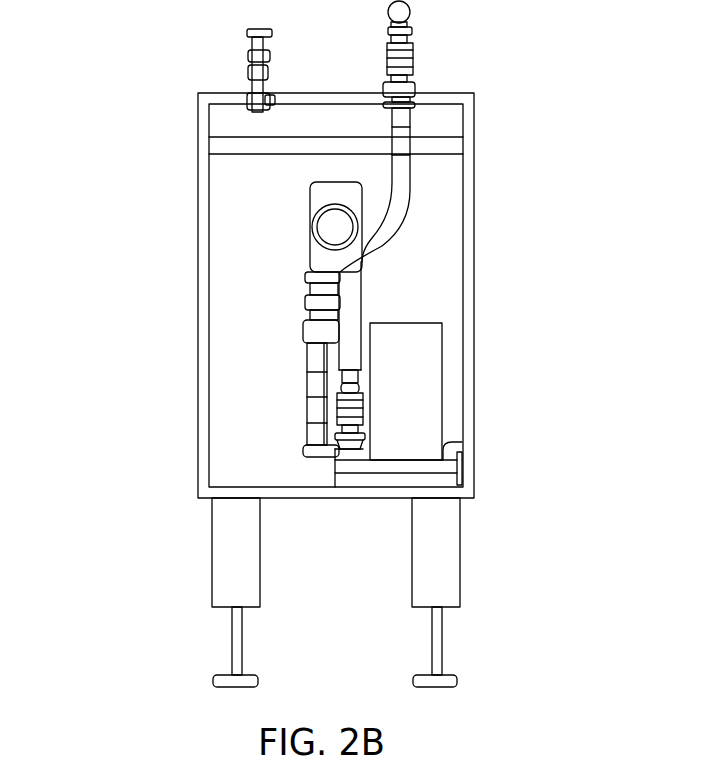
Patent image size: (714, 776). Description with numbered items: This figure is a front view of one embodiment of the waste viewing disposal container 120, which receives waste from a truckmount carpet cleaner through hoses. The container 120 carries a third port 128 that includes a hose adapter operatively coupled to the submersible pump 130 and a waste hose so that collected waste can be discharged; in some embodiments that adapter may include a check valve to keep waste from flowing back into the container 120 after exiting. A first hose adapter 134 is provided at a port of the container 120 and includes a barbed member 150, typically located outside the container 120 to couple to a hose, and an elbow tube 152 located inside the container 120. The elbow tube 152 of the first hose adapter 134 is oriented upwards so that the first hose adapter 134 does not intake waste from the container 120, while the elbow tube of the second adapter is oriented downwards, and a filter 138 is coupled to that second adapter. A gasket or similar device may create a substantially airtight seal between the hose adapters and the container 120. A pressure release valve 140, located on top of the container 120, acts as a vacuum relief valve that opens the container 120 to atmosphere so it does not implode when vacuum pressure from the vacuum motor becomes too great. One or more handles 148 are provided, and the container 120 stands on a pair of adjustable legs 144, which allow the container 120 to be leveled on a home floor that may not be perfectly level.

The waste viewing disposal container 120 is at (124, 38).
The third port 128 is at (410, 97).
The submersible pump 130 is at (443, 382).
The first hose adapter 134 is at (296, 215).
The filter 138 is at (303, 331).
The pressure release valve 140 is at (247, 24).
The adjustable legs 144 is at (212, 552).
The handles 148 is at (220, 147).
The barbed member 150 is at (363, 202).
The elbow tube 152 is at (310, 257).